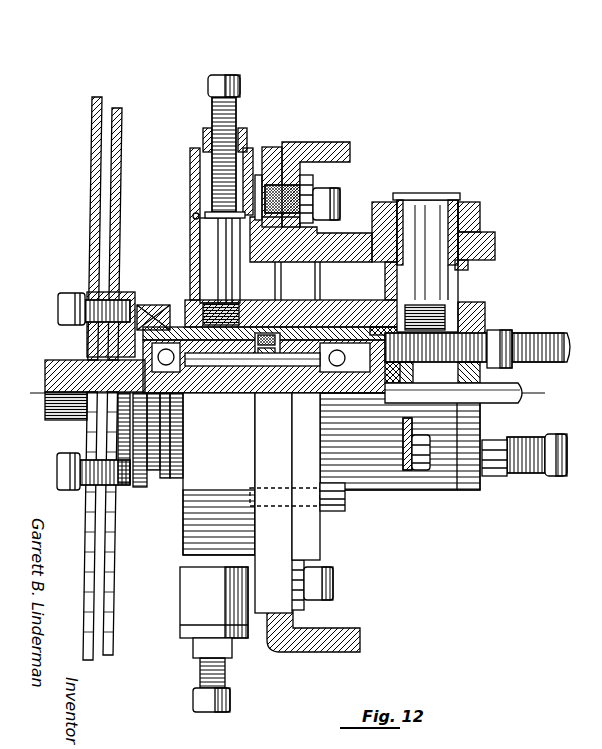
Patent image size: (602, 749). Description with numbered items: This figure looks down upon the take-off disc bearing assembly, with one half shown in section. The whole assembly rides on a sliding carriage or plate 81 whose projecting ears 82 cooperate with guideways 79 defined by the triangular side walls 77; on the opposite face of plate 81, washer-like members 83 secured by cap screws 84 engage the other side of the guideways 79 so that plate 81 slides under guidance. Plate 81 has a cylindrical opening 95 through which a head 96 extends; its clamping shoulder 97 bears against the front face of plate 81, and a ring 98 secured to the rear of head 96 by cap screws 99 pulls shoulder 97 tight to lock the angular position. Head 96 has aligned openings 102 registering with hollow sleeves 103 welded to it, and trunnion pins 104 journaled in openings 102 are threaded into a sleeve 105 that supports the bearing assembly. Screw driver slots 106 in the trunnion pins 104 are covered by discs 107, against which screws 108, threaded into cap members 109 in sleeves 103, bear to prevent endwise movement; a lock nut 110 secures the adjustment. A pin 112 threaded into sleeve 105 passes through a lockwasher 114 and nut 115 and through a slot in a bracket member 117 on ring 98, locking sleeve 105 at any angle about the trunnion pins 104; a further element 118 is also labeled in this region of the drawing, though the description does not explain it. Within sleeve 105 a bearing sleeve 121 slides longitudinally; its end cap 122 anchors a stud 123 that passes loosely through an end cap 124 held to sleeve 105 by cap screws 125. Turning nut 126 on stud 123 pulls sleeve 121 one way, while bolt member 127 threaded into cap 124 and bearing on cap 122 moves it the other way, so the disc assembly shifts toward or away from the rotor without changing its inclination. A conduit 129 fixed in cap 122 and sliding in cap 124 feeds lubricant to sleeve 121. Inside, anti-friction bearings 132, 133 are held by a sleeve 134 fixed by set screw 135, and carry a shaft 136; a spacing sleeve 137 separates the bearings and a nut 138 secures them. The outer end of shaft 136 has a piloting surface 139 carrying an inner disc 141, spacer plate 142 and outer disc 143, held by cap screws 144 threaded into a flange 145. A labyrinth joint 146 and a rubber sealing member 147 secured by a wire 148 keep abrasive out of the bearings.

The side wall 77 is at (326, 143).
The guideway 79 is at (280, 598).
The sliding carriage plate 81 is at (280, 458).
The projecting ear 82 is at (271, 172).
The washer-like member 83 is at (313, 187).
The cap screw 84 is at (339, 197).
The cylindrical opening 95 is at (281, 268).
The head 96 is at (249, 267).
The clamping shoulder 97 is at (258, 176).
The ring 98 is at (317, 261).
The cap screw 99 is at (346, 511).
The aligned opening 102 is at (195, 249).
The hollow sleeve 103 is at (197, 193).
The trunnion pin 104 is at (205, 272).
The sleeve 105 is at (339, 306).
The screw driver slot 106 is at (205, 225).
The disc 107 is at (193, 216).
The screw 108 is at (197, 178).
The cap member 109 is at (203, 149).
The lock nut 110 is at (238, 138).
The pin 112 is at (450, 284).
The lockwasher 114 is at (483, 233).
The nut 115 is at (479, 206).
The bracket member 117 is at (496, 247).
The cylinder 118 is at (428, 198).
The bearing sleeve 121 is at (379, 300).
The end cap 122 is at (413, 375).
The stud member 123 is at (541, 337).
The end cap 124 is at (486, 309).
The cap screw 125 is at (497, 477).
The nut 126 is at (508, 332).
The bolt member 127 is at (524, 441).
The conduit 129 is at (517, 387).
The anti-friction bearing 132 is at (185, 387).
The anti-friction bearing 133 is at (333, 377).
The sleeve 134 is at (195, 376).
The set screw 135 is at (248, 370).
The shaft 136 is at (222, 371).
The spacing sleeve 137 is at (266, 371).
The nut 138 is at (357, 379).
The piloting surface 139 is at (65, 366).
The inner disc 141 is at (123, 114).
The spacer plate 142 is at (100, 290).
The outer disc 143 is at (91, 188).
The cap screw 144 is at (68, 296).
The flange 145 is at (124, 294).
The labyrinth joint 146 is at (88, 340).
The rubber sealing member 147 is at (147, 479).
The wire 148 is at (152, 307).